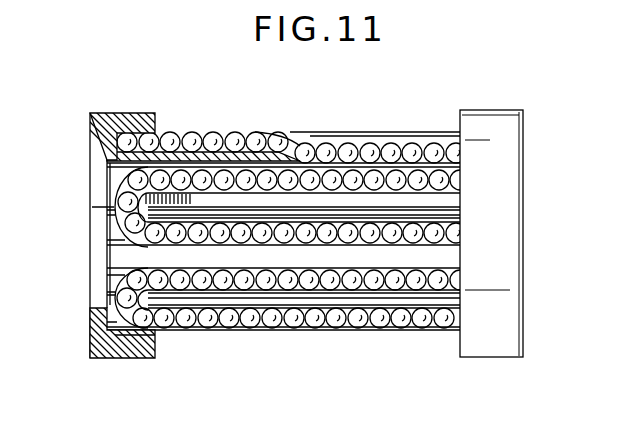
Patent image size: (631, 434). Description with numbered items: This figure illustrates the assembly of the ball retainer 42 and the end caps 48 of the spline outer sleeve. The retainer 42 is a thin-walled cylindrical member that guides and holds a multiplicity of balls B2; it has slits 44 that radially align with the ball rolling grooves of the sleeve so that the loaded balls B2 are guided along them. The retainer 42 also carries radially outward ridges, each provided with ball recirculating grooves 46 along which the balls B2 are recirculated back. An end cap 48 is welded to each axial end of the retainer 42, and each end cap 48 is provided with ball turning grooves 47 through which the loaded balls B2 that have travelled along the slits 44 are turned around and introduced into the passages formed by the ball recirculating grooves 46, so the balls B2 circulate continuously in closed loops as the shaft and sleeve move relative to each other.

The ball retainer 42 is at (402, 335).
The slits 44 is at (415, 228).
The ball recirculating grooves 46 is at (445, 170).
The ball turning grooves 47 is at (128, 140).
The end cap 48 is at (90, 132).
The balls B2 is at (270, 131).